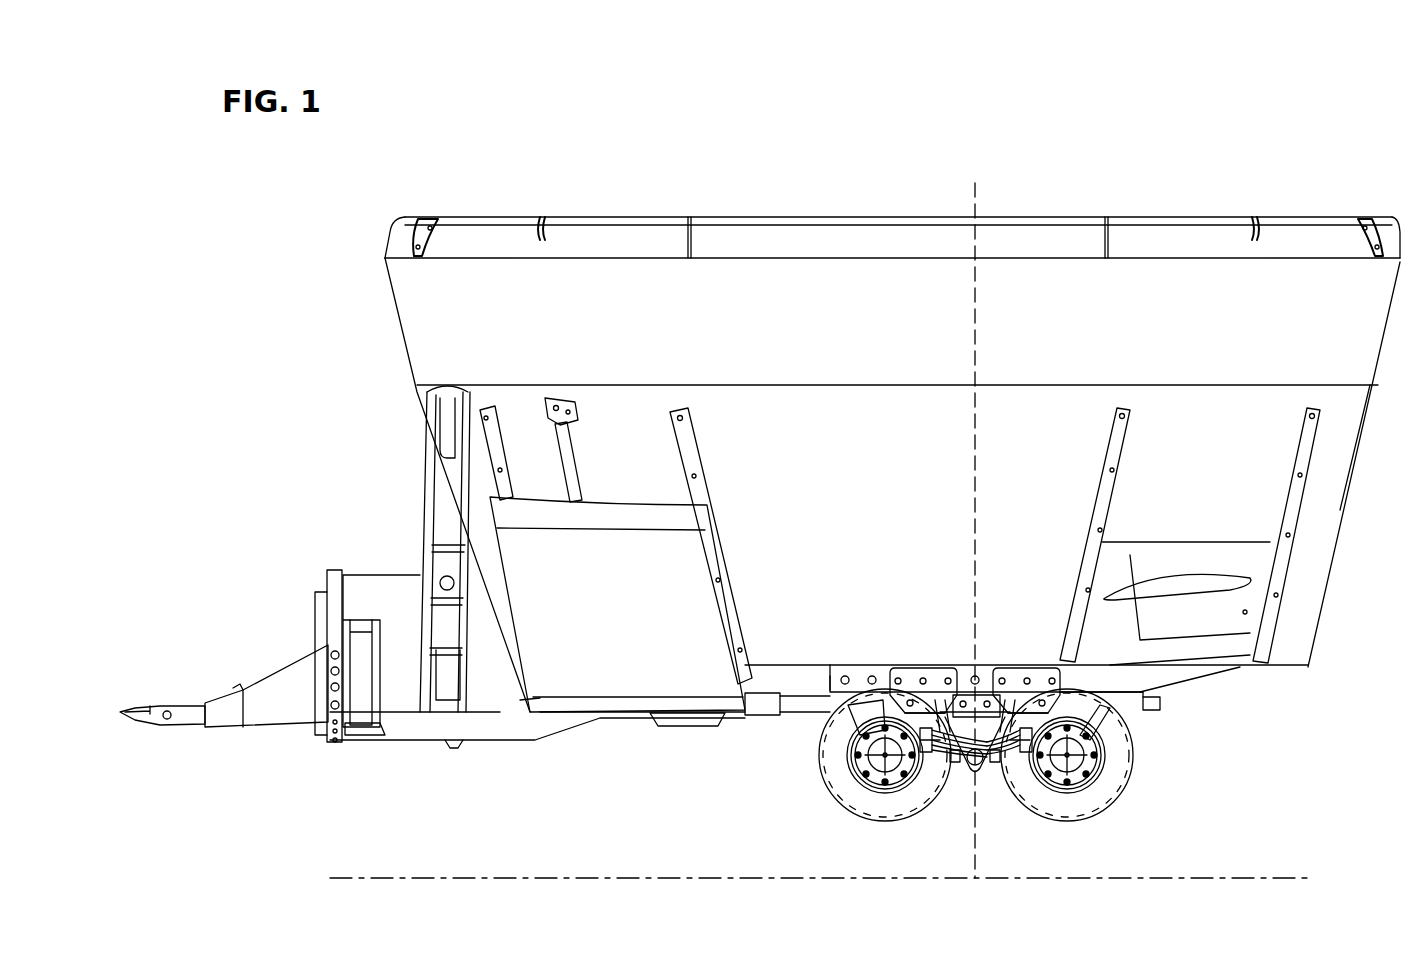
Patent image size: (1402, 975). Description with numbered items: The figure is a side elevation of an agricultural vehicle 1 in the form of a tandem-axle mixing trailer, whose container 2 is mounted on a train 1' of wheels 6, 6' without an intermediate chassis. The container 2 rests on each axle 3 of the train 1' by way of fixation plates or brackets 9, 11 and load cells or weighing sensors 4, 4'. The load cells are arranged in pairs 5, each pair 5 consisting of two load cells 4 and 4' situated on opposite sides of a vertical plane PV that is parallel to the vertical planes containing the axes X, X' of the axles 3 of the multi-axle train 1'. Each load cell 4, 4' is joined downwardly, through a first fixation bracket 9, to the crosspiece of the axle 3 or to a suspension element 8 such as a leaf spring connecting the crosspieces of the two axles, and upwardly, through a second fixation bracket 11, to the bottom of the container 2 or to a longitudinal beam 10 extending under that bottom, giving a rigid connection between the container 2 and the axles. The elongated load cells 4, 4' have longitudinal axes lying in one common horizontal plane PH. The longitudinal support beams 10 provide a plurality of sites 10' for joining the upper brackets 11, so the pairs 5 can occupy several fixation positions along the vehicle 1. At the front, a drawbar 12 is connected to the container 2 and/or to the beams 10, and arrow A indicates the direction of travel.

The agricultural vehicle 1 is at (892, 520).
The train of wheels 1' is at (785, 754).
The container 2 is at (1358, 470).
The axle 3 is at (1022, 817).
The load cell 4 is at (945, 765).
The load cell 4' is at (1008, 765).
The pair of load cells 5 is at (1010, 812).
The wheel 6 is at (881, 778).
The wheel 6' is at (1082, 770).
The suspension element 8 is at (1013, 740).
The first fixation plate or bracket 9 is at (983, 740).
The longitudinal beam 10 is at (770, 714).
The fixation sites 10' is at (859, 640).
The second fixation plate or bracket 11 is at (882, 690).
The drawbar 12 is at (336, 750).
The axis of axle X is at (868, 812).
The axis of axle X' is at (1125, 774).
The vertical plane PV is at (972, 208).
The horizontal plane PH is at (1228, 878).
The direction of travel A is at (168, 528).